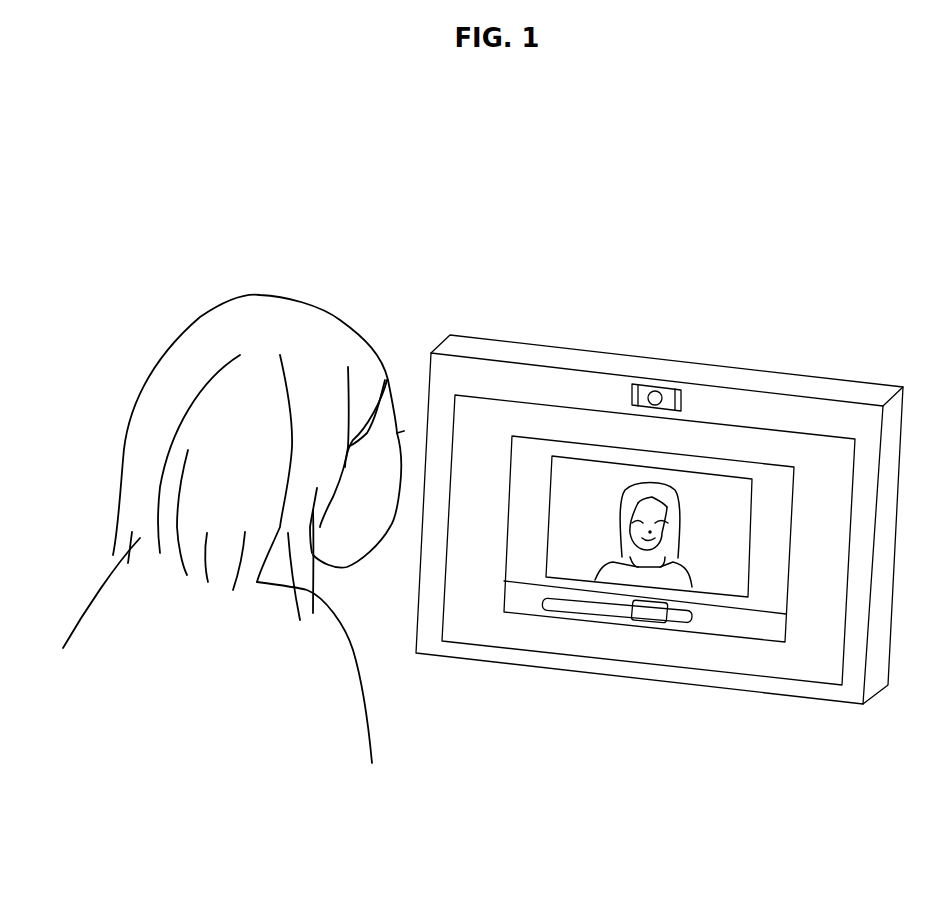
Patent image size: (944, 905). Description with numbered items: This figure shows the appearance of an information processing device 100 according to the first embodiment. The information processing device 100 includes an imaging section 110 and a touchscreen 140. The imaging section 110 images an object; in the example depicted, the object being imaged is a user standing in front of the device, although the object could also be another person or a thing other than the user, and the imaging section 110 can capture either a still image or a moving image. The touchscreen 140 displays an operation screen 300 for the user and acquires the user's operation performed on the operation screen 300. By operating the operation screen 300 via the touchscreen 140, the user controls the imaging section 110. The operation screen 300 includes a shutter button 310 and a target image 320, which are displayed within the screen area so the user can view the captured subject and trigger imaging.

The information processing device 100 is at (783, 372).
The imaging section 110 is at (653, 385).
The touchscreen 140 is at (482, 635).
The operation screen 300 is at (543, 438).
The shutter button 310 is at (652, 625).
The target image 320 is at (747, 580).